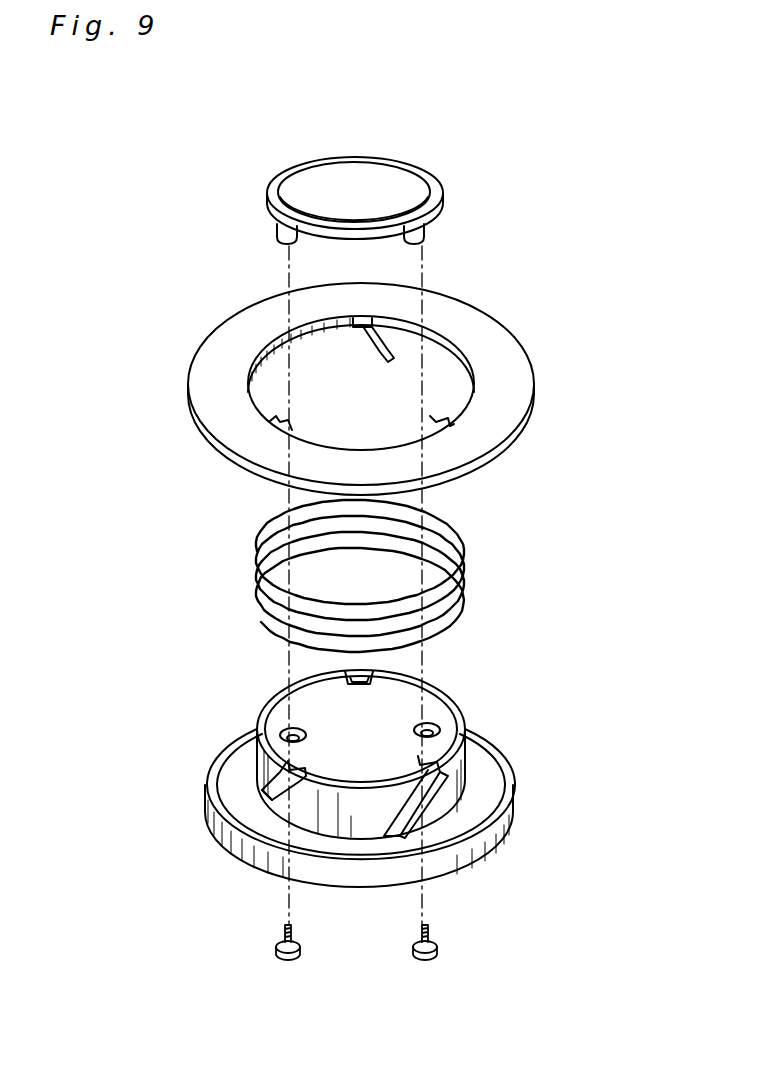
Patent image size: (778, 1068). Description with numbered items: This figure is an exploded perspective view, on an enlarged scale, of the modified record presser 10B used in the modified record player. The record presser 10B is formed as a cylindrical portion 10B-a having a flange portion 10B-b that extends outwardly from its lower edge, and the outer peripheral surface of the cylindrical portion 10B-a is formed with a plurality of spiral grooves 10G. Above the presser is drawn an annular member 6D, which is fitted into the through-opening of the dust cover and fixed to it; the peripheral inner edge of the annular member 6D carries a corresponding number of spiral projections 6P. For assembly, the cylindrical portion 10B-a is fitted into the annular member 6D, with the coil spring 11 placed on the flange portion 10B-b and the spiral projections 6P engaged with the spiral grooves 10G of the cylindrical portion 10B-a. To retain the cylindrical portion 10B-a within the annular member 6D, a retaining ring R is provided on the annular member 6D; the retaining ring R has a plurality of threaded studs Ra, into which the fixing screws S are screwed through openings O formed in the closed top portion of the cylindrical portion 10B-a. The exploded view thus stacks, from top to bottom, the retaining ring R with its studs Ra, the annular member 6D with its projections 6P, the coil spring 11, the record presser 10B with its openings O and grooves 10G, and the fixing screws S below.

The retaining ring R is at (368, 158).
The threaded studs Ra is at (430, 236).
The annular member 6D is at (535, 413).
The spiral projections 6P is at (368, 318).
The coil spring 11 is at (468, 603).
The modified record presser 10B is at (559, 548).
The cylindrical portion 10B-a is at (458, 773).
The flange portion 10B-b is at (345, 878).
The openings O is at (283, 733).
The spiral grooves 10G is at (268, 787).
The fixing screws S is at (279, 963).